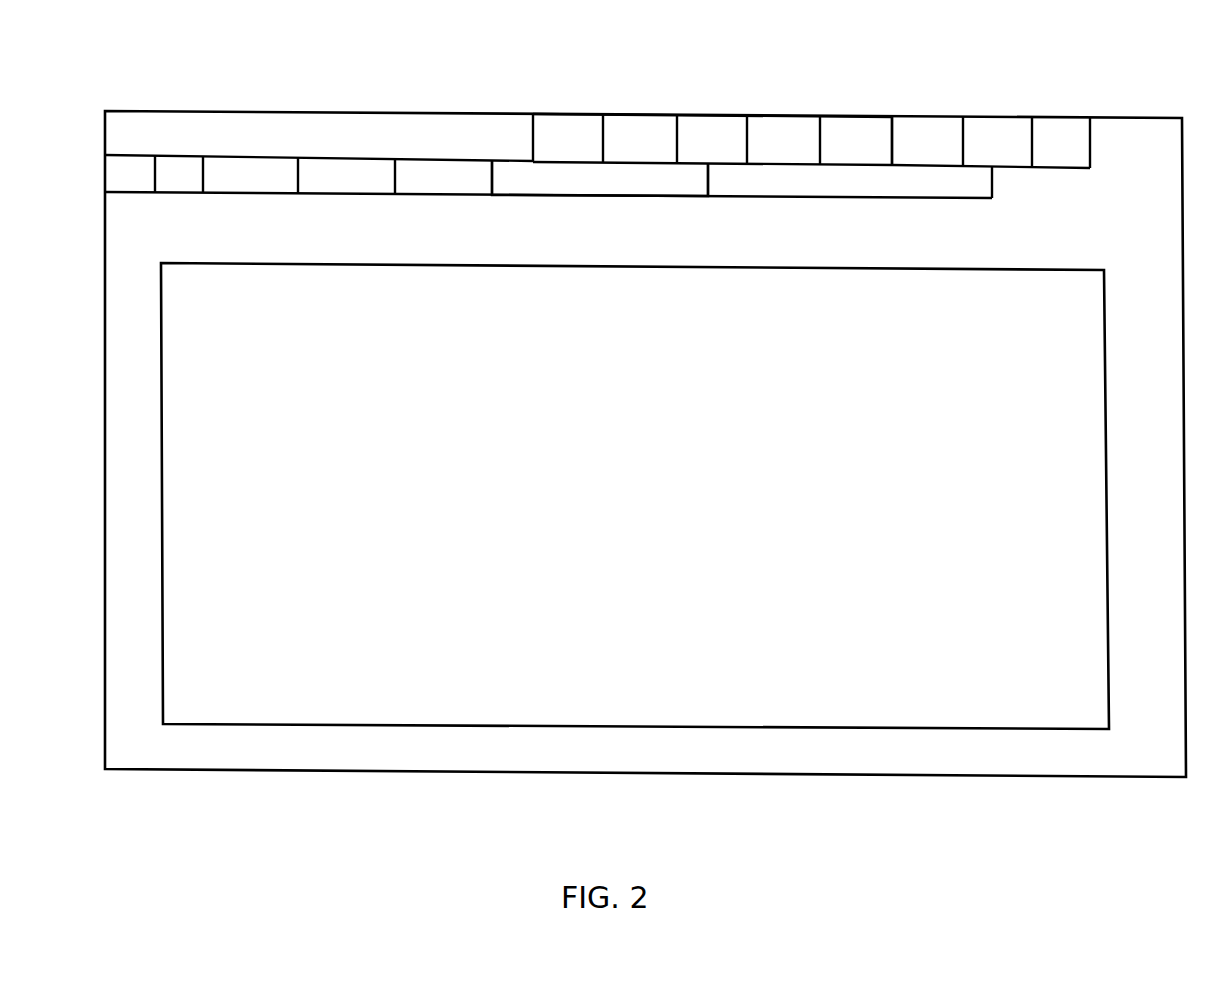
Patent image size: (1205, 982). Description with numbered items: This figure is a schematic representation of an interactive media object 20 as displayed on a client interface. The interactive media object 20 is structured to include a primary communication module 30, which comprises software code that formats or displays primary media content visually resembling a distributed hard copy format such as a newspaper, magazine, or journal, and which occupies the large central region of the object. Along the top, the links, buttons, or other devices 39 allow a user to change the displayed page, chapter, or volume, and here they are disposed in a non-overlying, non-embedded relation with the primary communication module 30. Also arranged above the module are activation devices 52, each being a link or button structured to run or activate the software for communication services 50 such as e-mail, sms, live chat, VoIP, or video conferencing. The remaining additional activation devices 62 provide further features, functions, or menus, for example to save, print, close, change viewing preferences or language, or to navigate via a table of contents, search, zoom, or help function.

The interactive media object 20 is at (77, 117).
The primary communication module 30 is at (607, 500).
The links, buttons, or other devices 39 is at (594, 190).
The communication services 50 is at (565, 95).
The activation device 52 is at (568, 148).
The additional activation devices 62 is at (136, 184).